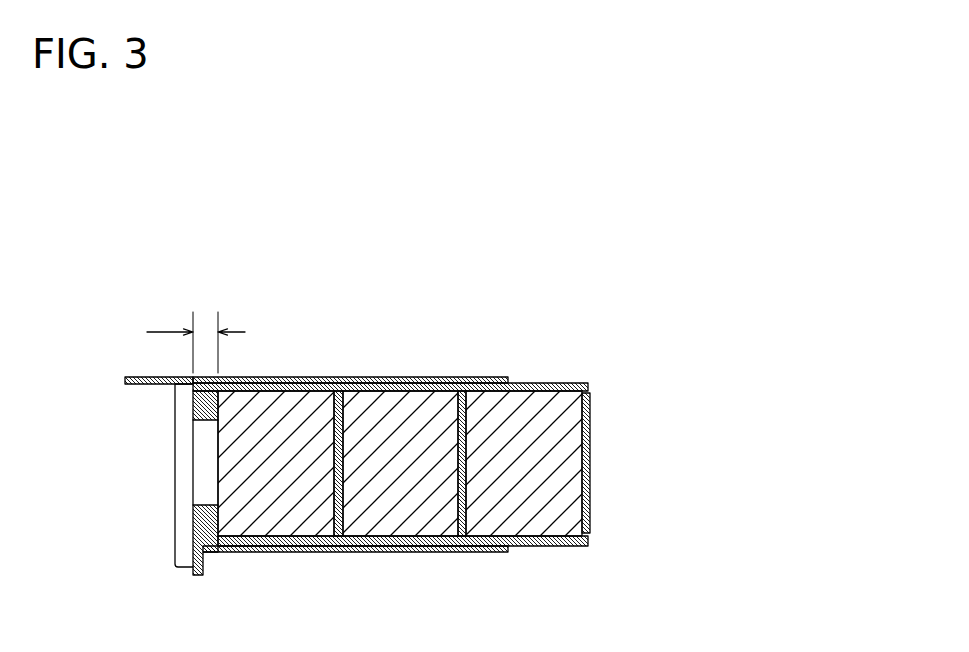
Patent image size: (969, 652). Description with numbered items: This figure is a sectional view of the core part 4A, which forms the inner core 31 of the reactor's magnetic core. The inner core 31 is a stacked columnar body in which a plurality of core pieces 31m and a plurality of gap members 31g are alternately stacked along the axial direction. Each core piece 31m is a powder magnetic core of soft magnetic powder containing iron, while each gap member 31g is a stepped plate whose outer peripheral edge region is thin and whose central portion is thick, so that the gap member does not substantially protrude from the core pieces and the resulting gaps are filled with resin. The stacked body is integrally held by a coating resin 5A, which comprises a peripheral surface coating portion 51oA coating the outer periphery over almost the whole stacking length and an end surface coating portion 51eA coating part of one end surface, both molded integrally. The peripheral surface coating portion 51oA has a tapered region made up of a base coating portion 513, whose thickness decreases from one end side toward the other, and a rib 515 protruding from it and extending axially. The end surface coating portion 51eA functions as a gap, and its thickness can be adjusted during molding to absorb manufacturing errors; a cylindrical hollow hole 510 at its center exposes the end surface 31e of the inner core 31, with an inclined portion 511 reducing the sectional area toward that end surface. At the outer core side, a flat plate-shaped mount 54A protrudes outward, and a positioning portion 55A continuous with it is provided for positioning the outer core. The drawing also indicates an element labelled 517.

The core part 4A is at (659, 346).
The mount 54A is at (152, 378).
The peripheral surface coating portion 51oA is at (351, 314).
The base coating portion 513 is at (366, 383).
The rib 515 is at (465, 383).
The end wall 517 is at (545, 383).
The positioning portion 55A is at (183, 560).
The inclined portion 511 is at (215, 421).
The hollow hole 510 is at (193, 496).
The end surface 31e is at (216, 467).
The end surface coating portion 51eA is at (193, 516).
The coating resin 5A is at (579, 552).
The inner core 31 is at (513, 474).
The core piece 31m is at (272, 513).
The gap member 31g is at (537, 470).